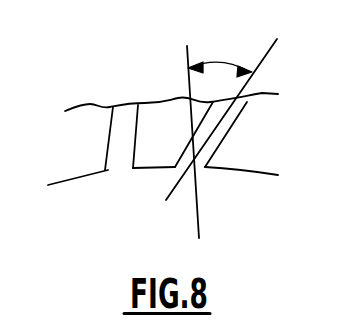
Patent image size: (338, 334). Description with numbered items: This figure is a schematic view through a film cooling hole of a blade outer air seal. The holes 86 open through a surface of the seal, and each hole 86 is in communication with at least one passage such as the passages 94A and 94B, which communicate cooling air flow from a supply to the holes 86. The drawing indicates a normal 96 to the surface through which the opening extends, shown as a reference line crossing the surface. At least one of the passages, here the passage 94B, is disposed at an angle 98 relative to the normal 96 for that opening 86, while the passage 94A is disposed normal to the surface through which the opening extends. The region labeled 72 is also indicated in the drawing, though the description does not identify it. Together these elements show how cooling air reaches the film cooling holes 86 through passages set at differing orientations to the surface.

The platform surface 72 is at (73, 180).
The film cooling hole 86 is at (173, 170).
The passage 94A is at (118, 133).
The passage 94B is at (222, 135).
The normal 96 is at (185, 58).
The angle 98 is at (221, 64).